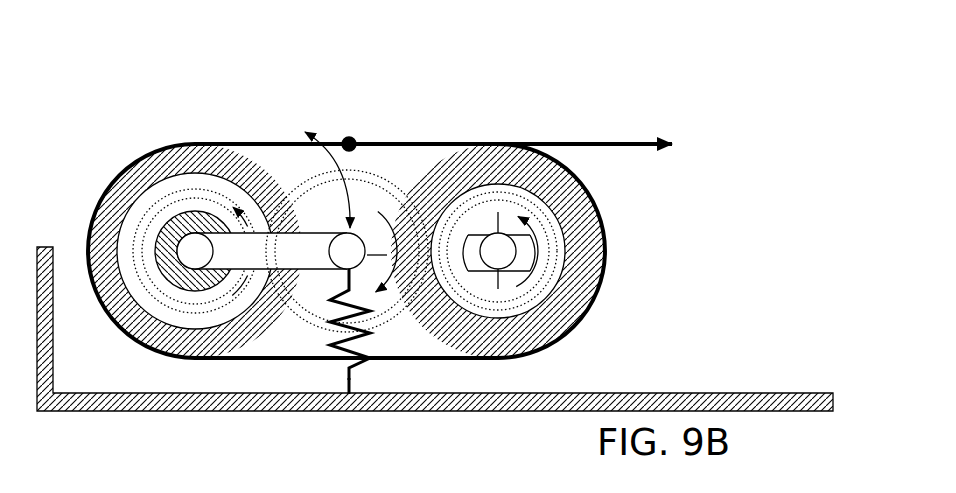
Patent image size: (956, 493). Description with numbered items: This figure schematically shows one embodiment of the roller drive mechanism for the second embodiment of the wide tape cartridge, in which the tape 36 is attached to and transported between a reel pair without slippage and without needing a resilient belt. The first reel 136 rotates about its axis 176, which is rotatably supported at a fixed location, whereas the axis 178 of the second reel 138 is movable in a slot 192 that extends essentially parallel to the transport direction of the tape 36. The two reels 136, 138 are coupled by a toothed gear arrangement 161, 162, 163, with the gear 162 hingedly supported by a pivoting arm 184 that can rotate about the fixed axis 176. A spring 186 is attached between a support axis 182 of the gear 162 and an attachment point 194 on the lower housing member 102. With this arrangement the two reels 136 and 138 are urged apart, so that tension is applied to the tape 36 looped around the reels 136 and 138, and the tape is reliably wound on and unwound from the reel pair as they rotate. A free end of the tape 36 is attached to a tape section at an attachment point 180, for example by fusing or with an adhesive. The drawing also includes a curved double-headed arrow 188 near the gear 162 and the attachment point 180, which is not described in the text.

The tape 36 is at (620, 143).
The lower housing member 102 is at (750, 398).
The first reel 136 is at (190, 165).
The second reel 138 is at (537, 147).
The toothed gear 161 is at (167, 198).
The gear 162 is at (315, 182).
The toothed gear 163 is at (558, 265).
The axis of first reel 176 is at (158, 243).
The axis of second reel 178 is at (498, 255).
The attachment point 180 is at (350, 140).
The support axis 182 is at (335, 268).
The pivoting arm 184 is at (273, 197).
The spring 186 is at (335, 360).
The direction arrow 188 is at (350, 186).
The slot 192 is at (483, 267).
The attachment point 194 is at (347, 400).